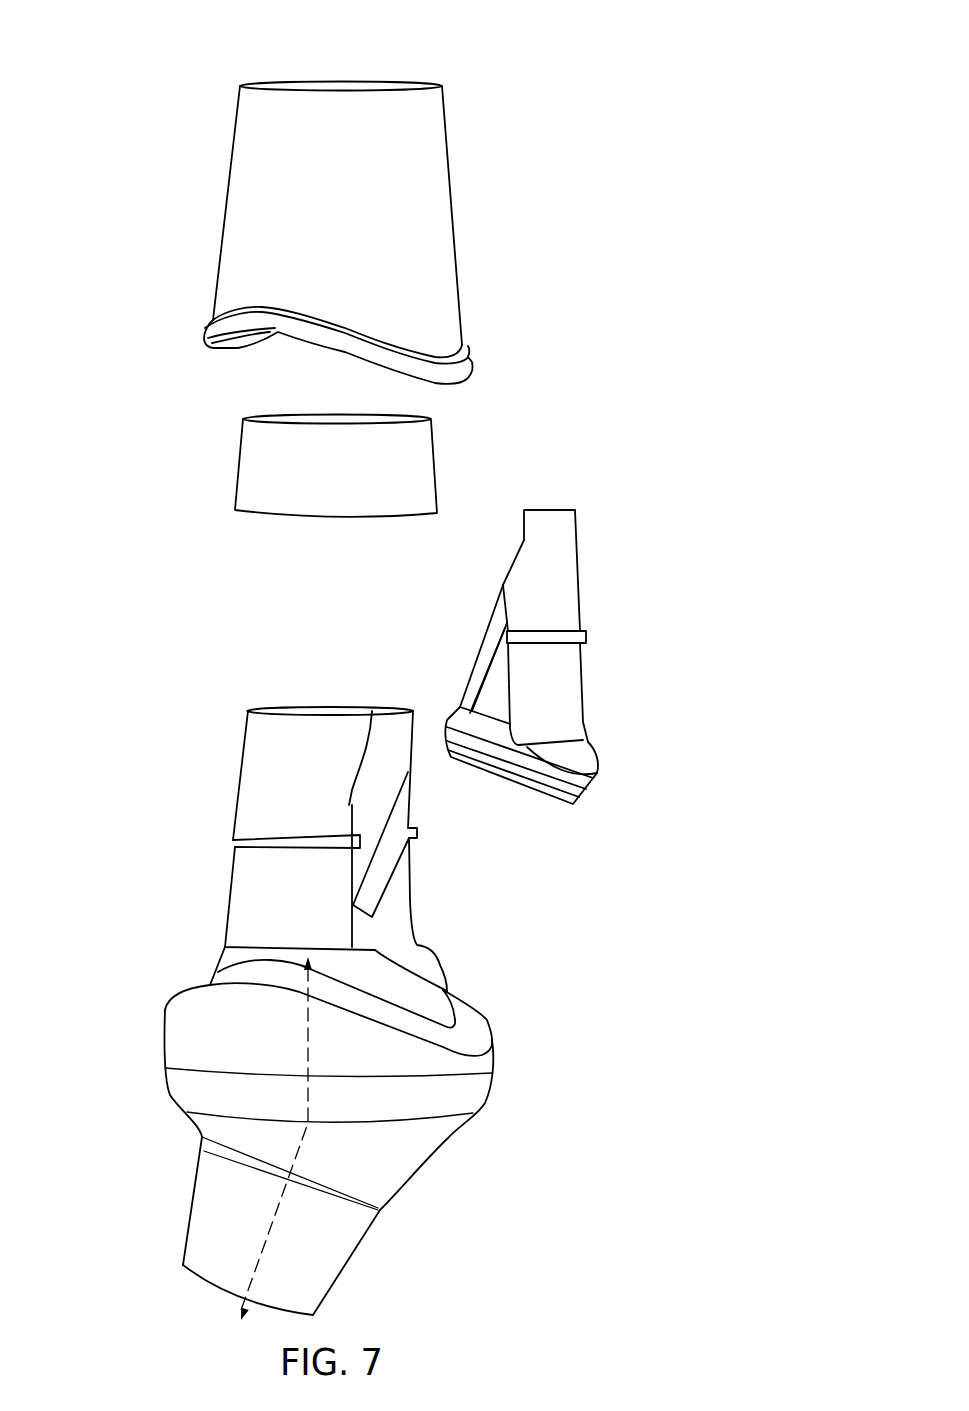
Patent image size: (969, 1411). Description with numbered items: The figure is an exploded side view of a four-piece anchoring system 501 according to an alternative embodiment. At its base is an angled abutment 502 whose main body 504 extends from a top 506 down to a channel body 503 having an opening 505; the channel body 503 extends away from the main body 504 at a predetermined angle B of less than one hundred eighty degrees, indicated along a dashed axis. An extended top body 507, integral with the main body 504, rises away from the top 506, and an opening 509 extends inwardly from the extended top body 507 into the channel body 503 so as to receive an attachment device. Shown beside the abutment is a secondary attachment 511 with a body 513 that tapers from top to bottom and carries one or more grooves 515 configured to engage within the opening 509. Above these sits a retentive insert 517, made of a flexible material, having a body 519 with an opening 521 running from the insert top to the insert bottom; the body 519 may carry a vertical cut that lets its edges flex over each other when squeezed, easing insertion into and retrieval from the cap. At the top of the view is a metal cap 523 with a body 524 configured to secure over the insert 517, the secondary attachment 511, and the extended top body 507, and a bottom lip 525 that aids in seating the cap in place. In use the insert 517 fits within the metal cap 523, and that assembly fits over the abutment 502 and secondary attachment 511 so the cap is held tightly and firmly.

The four-piece anchoring system 501 is at (530, 57).
The angled abutment 502 is at (222, 678).
The channel body 503 is at (192, 1208).
The main body 504 is at (162, 1043).
The opening 505 is at (208, 1302).
The top 506 is at (172, 968).
The extended top body 507 is at (240, 775).
The opening 509 is at (404, 889).
The secondary attachment 511 is at (600, 505).
The body 513 is at (580, 682).
The grooves 515 is at (482, 640).
The retentive insert 517 is at (207, 414).
The body 519 is at (237, 463).
The opening 521 is at (351, 413).
The metal cap 523 is at (243, 62).
The body 524 is at (229, 184).
The bottom lip 525 is at (203, 334).
The predetermined angle B is at (273, 1230).